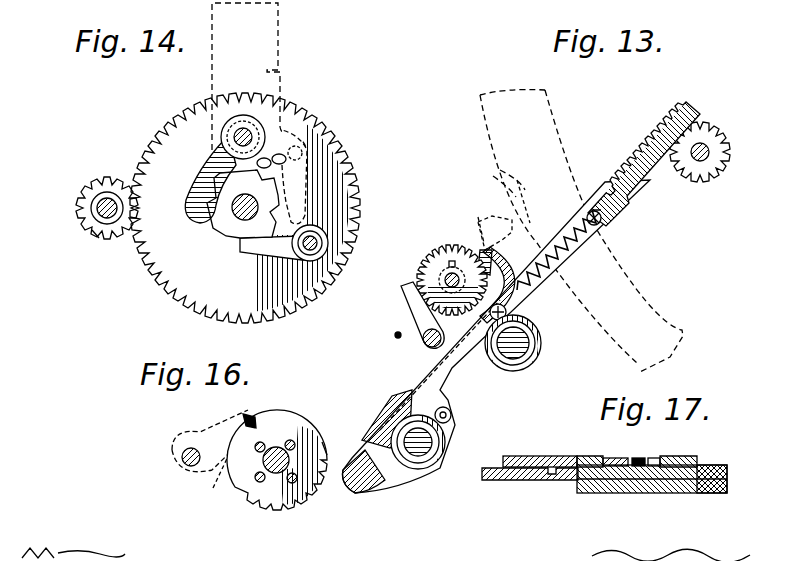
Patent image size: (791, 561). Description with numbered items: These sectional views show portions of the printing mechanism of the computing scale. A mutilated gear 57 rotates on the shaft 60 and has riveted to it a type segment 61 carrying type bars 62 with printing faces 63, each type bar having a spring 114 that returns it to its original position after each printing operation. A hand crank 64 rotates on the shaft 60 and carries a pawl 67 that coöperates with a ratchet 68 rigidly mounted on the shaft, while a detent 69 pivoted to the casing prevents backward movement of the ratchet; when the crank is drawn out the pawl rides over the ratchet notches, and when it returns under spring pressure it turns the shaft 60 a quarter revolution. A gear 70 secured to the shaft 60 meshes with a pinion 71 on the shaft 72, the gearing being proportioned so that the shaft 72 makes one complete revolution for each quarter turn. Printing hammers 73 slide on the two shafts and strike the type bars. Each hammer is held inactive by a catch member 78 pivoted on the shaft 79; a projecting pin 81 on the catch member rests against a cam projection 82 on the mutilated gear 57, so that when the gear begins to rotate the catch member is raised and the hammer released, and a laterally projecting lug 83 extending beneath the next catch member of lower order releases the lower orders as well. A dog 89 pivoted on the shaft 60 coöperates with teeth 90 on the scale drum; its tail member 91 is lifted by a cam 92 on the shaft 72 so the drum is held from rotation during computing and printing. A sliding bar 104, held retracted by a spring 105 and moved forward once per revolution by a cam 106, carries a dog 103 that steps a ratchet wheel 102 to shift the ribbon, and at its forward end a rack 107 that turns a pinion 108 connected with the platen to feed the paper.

In FIG. 16, the mutilated gear 57 is at (338, 418).
In FIG. 14, the shaft 60 is at (243, 214).
In FIG. 13, the shaft 60 is at (530, 345).
In FIG. 16, the shaft 60 is at (277, 475).
In FIG. 17, the type segment 61 is at (546, 456).
In FIG. 17, the type bar 62 is at (666, 456).
In FIG. 17, the printing face 63 is at (722, 474).
In FIG. 14, the hand crank 64 is at (272, 70).
In FIG. 14, the pawl 67 is at (199, 190).
In FIG. 14, the ratchet 68 is at (257, 183).
In FIG. 14, the detent 69 is at (270, 253).
In FIG. 14, the gear 70 is at (338, 192).
In FIG. 14, the pinion 71 is at (97, 233).
In FIG. 14, the shaft 72 is at (92, 212).
In FIG. 13, the shaft 72 is at (420, 458).
In FIG. 17, the printing hammer 73 is at (550, 479).
In FIG. 16, the catch member 78 is at (207, 432).
In FIG. 13, the shaft 79 is at (420, 346).
In FIG. 16, the shaft 79 is at (184, 460).
In FIG. 16, the projecting pin 81 is at (249, 415).
In FIG. 16, the cam projection 82 is at (266, 414).
In FIG. 16, the laterally projecting lug 83 is at (208, 479).
In FIG. 13, the dog 89 is at (492, 211).
In FIG. 13, the teeth 90 is at (581, 231).
In FIG. 13, the tail member 91 is at (390, 400).
In FIG. 13, the cam 92 is at (452, 420).
In FIG. 13, the ratchet wheel 102 is at (425, 272).
In FIG. 13, the dog 103 is at (480, 246).
In FIG. 13, the sliding bar 104 is at (455, 365).
In FIG. 13, the spring 105 is at (565, 252).
In FIG. 13, the cam 106 is at (372, 494).
In FIG. 13, the rack 107 is at (658, 150).
In FIG. 13, the pinion 108 is at (708, 132).
In FIG. 17, the spring 114 is at (614, 458).